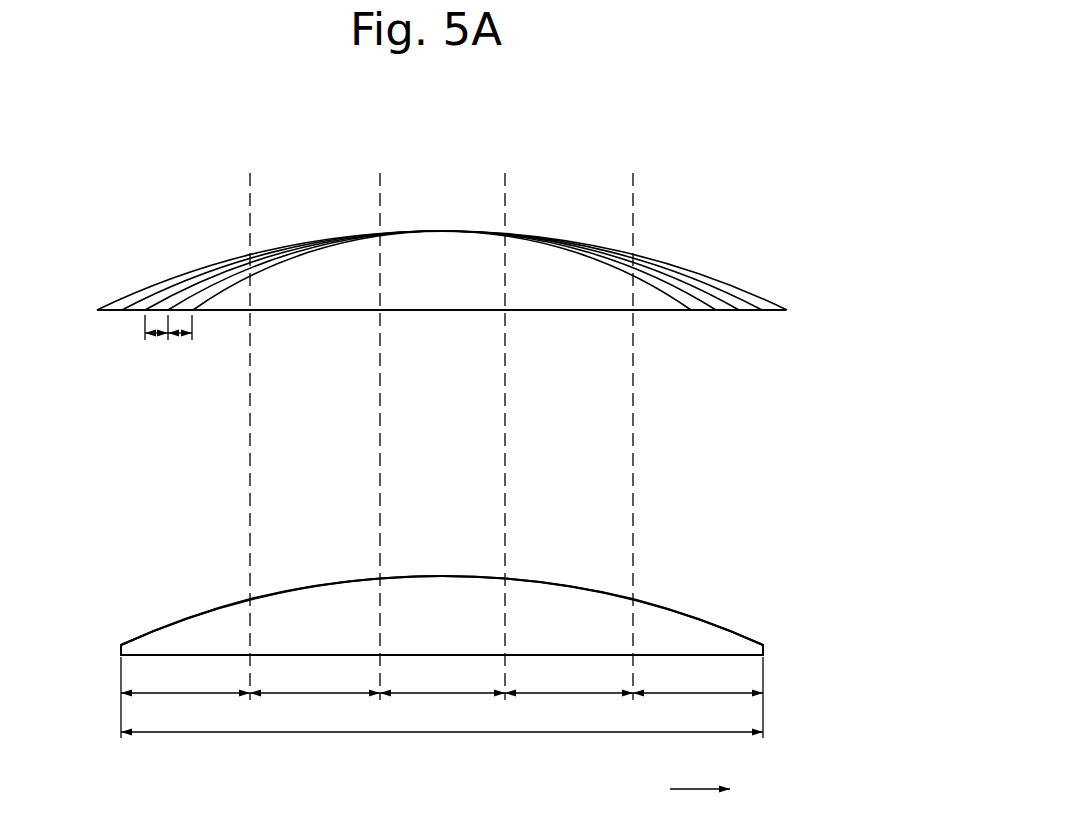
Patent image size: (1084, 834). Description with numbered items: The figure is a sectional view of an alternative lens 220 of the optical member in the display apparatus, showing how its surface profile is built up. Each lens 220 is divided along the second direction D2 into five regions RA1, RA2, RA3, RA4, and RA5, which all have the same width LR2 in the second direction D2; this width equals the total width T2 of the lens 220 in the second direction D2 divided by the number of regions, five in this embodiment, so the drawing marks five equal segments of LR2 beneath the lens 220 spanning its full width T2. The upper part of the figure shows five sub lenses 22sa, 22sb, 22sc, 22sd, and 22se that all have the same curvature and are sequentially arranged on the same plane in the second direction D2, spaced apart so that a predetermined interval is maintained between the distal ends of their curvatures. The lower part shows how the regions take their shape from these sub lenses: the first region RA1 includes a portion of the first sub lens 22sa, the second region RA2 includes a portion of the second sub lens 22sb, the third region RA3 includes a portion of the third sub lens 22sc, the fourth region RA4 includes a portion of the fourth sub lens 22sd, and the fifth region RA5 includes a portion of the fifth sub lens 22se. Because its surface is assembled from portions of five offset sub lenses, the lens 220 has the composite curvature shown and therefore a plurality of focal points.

The first sub lens 22sa is at (107, 304).
The second sub lens 22sb is at (147, 292).
The third sub lens 22sc is at (180, 290).
The fourth sub lens 22sd is at (202, 290).
The fifth sub lens 22se is at (238, 282).
The lens 220 is at (744, 632).
The first region RA1 is at (183, 628).
The second region RA2 is at (315, 598).
The third region RA3 is at (442, 588).
The fourth region RA4 is at (573, 602).
The fifth region RA5 is at (697, 630).
The width of region LR2 is at (442, 706).
The width of lens T2 is at (442, 746).
The second direction D2 is at (713, 791).